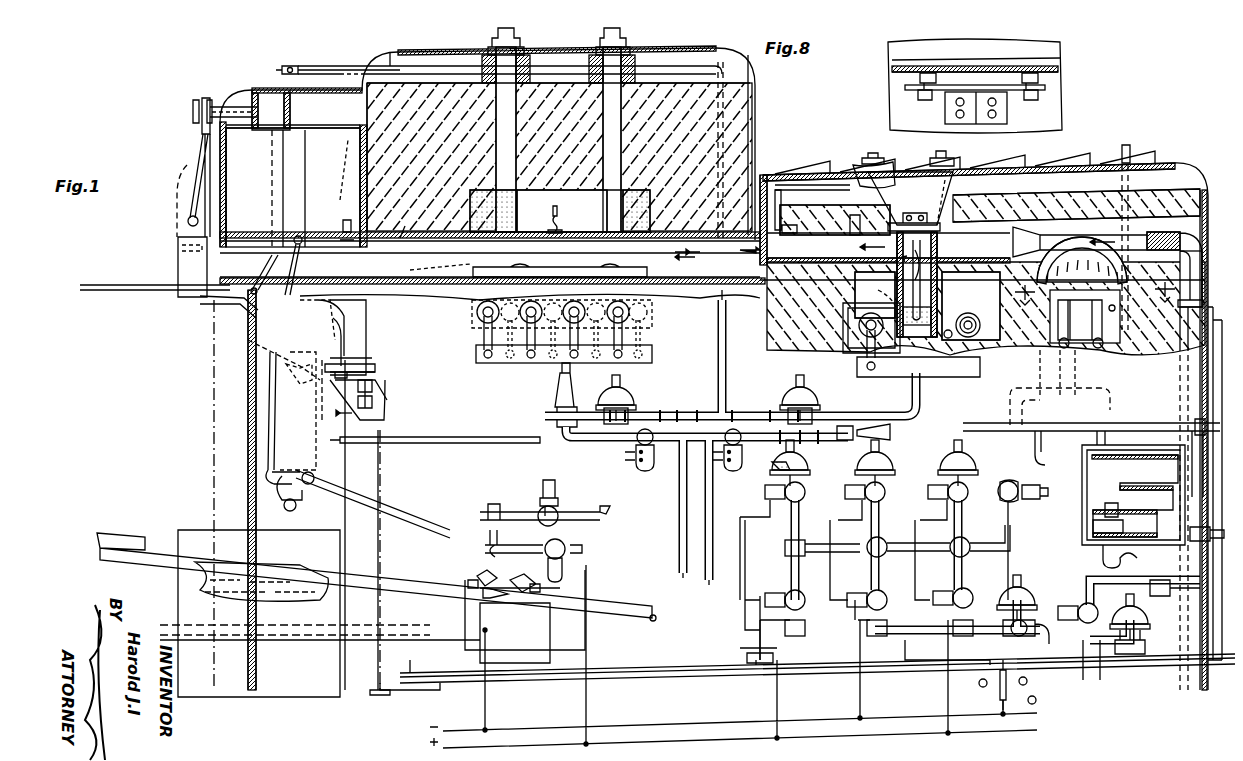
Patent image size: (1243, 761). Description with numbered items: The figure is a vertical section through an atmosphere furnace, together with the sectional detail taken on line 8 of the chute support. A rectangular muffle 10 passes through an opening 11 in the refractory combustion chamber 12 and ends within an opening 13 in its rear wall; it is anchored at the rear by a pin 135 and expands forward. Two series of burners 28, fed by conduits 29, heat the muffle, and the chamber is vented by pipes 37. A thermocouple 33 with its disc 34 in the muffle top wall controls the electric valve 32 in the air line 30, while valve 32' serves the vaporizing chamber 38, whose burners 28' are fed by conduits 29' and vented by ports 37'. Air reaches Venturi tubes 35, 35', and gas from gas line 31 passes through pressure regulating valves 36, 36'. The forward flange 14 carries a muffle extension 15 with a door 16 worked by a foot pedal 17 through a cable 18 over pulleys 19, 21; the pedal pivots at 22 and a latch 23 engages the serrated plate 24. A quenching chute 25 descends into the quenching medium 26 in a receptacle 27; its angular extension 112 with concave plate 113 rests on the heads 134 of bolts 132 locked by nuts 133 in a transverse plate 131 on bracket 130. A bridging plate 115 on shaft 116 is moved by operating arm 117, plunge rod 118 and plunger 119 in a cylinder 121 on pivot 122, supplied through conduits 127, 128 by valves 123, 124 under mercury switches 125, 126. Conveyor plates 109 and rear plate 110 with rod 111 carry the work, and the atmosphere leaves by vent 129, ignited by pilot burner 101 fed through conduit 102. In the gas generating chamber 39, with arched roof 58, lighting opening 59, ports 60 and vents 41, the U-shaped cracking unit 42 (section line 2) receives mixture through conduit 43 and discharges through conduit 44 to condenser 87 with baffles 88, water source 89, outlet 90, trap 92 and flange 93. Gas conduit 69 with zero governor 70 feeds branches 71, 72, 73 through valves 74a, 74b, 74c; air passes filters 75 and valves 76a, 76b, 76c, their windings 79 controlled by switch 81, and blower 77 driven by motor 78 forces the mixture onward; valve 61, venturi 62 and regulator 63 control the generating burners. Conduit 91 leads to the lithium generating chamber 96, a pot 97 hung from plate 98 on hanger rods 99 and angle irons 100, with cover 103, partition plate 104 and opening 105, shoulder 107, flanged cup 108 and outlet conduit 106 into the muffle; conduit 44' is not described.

In FIG. 8, the angular extension 112 is at (905, 58).
In FIG. 1, the angular extension 112 is at (345, 336).
In FIG. 8, the bolt heads 134 is at (932, 75).
In FIG. 1, the bolt heads 134 is at (385, 362).
In FIG. 8, the bolts 132 is at (955, 87).
In FIG. 1, the bolts 132 is at (385, 372).
In FIG. 8, the transverse plate 131 is at (1050, 72).
In FIG. 1, the transverse plate 131 is at (352, 358).
In FIG. 8, the nuts 133 is at (918, 96).
In FIG. 8, the bracket 130 is at (950, 98).
In FIG. 1, the bracket 130 is at (382, 392).
In FIG. 1, the pilot burner 101 is at (296, 66).
In FIG. 1, the conduit 102 is at (345, 66).
In FIG. 1, the pulley 21 is at (200, 95).
In FIG. 1, the pulley 19 is at (198, 128).
In FIG. 1, the door 16 is at (176, 250).
In FIG. 1, the vent 129 is at (293, 187).
In FIG. 1, the flange 14 is at (339, 170).
In FIG. 1, the muffle extension 15 is at (345, 232).
In FIG. 1, the plunge rod 118 is at (313, 250).
In FIG. 1, the operating arm 117 is at (272, 258).
In FIG. 1, the rod 111 is at (106, 287).
In FIG. 1, the shaft 116 is at (245, 298).
In FIG. 1, the plate 115 is at (248, 340).
In FIG. 1, the plunger 119 is at (300, 368).
In FIG. 1, the quenching chute 25 is at (250, 415).
In FIG. 1, the flexible conduit 127 is at (268, 462).
In FIG. 1, the flexible cable 18 is at (212, 480).
In FIG. 1, the foot pedal 17 is at (156, 550).
In FIG. 1, the pivot 22 is at (655, 616).
In FIG. 1, the latch 23 is at (390, 600).
In FIG. 1, the serrated plate 24 is at (378, 660).
In FIG. 1, the quenching medium 26 is at (205, 588).
In FIG. 1, the receptacle 27 is at (268, 680).
In FIG. 1, the burners 28 is at (540, 325).
In FIG. 1, the conduits 29 is at (545, 346).
In FIG. 1, the Venturi mixing tube 35 is at (547, 395).
In FIG. 1, the opening 13 is at (720, 290).
In FIG. 1, the pressure regulating valve 36 is at (630, 396).
In FIG. 1, the pressure regulating valve 36' is at (790, 395).
In FIG. 1, the Venturi mixing tube 35' is at (868, 418).
In FIG. 1, the electrically controlled valve 32 is at (639, 458).
In FIG. 1, the electrically controlled valve 32' is at (743, 450).
In FIG. 1, the gas line 31 is at (680, 512).
In FIG. 1, the air line 30 is at (712, 510).
In FIG. 1, the flexible conduit 128 is at (395, 505).
In FIG. 1, the electric valve 124 is at (548, 518).
In FIG. 1, the electric valve 123 is at (533, 551).
In FIG. 1, the mercury switch 125 is at (515, 582).
In FIG. 1, the mercury switch 126 is at (490, 578).
In FIG. 1, the section line 8 is at (337, 395).
In FIG. 1, the cylinder 121 is at (318, 462).
In FIG. 1, the pivot 122 is at (318, 478).
In FIG. 1, the concave plate 113 is at (340, 318).
In FIG. 1, the vent pipes 37 is at (559, 125).
In FIG. 1, the combustion chamber 12 is at (472, 205).
In FIG. 1, the opening 11 is at (416, 221).
In FIG. 1, the muffle 10 is at (460, 256).
In FIG. 1, the thermocouple 33 is at (562, 214).
In FIG. 1, the disc 34 is at (562, 230).
In FIG. 1, the conveyor plates 109 is at (560, 262).
In FIG. 1, the rear plate 110 is at (695, 257).
In FIG. 1, the vaporizing chamber 38 is at (858, 302).
In FIG. 1, the burners 28' is at (840, 331).
In FIG. 1, the conduits 29' is at (895, 353).
In FIG. 1, the pin 135 is at (830, 182).
In FIG. 1, the angle irons 100 is at (842, 185).
In FIG. 1, the ports 37' is at (930, 152).
In FIG. 1, the cover 103 is at (908, 215).
In FIG. 1, the lithium compound generating chamber 96 is at (900, 235).
In FIG. 1, the opening 105 is at (942, 202).
In FIG. 1, the gas outlet conduit 106 is at (870, 240).
In FIG. 1, the hanger rods 99 is at (888, 248).
In FIG. 1, the partition plate 104 is at (932, 246).
In FIG. 1, the metal pot 97 is at (875, 294).
In FIG. 1, the annular shoulder 107 is at (881, 302).
In FIG. 1, the plate 98 is at (971, 306).
In FIG. 1, the flanged cup 108 is at (948, 304).
In FIG. 1, the cracking unit 42 is at (1060, 300).
In FIG. 1, the arched roof 58 is at (1077, 311).
In FIG. 1, the lighting opening 59 is at (1089, 315).
In FIG. 1, the conduit 44 is at (1113, 330).
In FIG. 1, the section line 2 is at (1095, 283).
In FIG. 1, the gas generating chamber 39 is at (1050, 350).
In FIG. 1, the ports 60 is at (1110, 355).
In FIG. 1, the conduit 43 is at (1100, 392).
In FIG. 1, the dashed conduit 44' is at (1039, 412).
In FIG. 1, the vents 41 is at (1130, 152).
In FIG. 1, the conduit 91 is at (1000, 232).
In FIG. 1, the water source 89 is at (1140, 462).
In FIG. 1, the hollow baffles 88 is at (1112, 460).
In FIG. 1, the condensing chamber 87 is at (1085, 508).
In FIG. 1, the motor 78 is at (1032, 488).
In FIG. 1, the pump or blower 77 is at (1028, 547).
In FIG. 1, the filters 75 is at (805, 460).
In FIG. 1, the windings 79 is at (930, 490).
In FIG. 1, the electric valve 76c is at (795, 492).
In FIG. 1, the electric valve 76b is at (881, 491).
In FIG. 1, the electric valve 76a is at (968, 492).
In FIG. 1, the branch 73 is at (798, 590).
In FIG. 1, the branch 72 is at (880, 560).
In FIG. 1, the branch 71 is at (968, 560).
In FIG. 1, the electric valve 74c is at (782, 592).
In FIG. 1, the electric valve 74b is at (870, 592).
In FIG. 1, the electric valve 74a is at (948, 602).
In FIG. 1, the zero governor 70 is at (1030, 582).
In FIG. 1, the conduit 69 is at (1024, 627).
In FIG. 1, the electric valve 61 is at (1075, 604).
In FIG. 1, the venturi 62 is at (1155, 610).
In FIG. 1, the gas pressure regulating valve 63 is at (1125, 645).
In FIG. 1, the switch 81 is at (1000, 685).
In FIG. 1, the trap 92 is at (1100, 566).
In FIG. 1, the flange 93 is at (1126, 547).
In FIG. 1, the outlet conduit 90 is at (1192, 550).